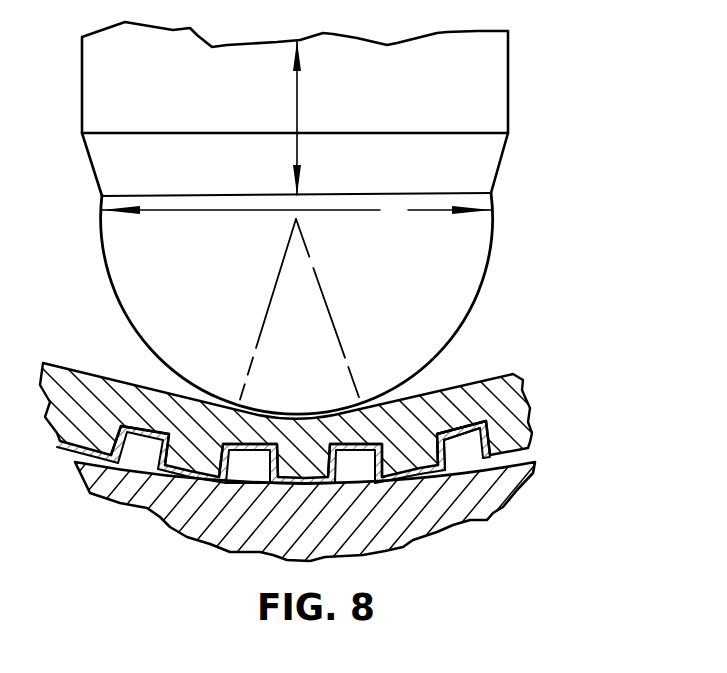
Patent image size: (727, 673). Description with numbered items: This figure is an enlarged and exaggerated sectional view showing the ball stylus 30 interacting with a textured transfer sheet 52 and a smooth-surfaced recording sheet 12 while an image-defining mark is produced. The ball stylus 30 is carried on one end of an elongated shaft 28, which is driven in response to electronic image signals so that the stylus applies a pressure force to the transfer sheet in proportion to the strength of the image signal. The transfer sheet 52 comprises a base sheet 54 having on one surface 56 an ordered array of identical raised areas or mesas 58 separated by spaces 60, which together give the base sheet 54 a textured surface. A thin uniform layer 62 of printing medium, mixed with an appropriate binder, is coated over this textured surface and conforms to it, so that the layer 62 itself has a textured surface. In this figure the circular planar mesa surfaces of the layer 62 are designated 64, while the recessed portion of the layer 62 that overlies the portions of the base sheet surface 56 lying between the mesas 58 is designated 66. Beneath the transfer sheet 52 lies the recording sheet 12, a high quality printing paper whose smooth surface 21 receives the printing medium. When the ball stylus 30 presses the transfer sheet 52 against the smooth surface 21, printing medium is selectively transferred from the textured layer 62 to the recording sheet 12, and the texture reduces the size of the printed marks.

The recording sheet 12 is at (510, 511).
The smooth surface 21 is at (250, 483).
The elongated shaft 28 is at (497, 113).
The ball stylus 30 is at (480, 250).
The transfer sheet 52 is at (609, 331).
The base sheet 54 is at (507, 377).
The surface 56 is at (468, 440).
The raised areas or mesas 58 is at (414, 455).
The spaces 60 is at (354, 477).
The printing medium layer 62 is at (532, 449).
The circular planar mesa surfaces 64 is at (420, 471).
The recessed portion 66 is at (223, 444).